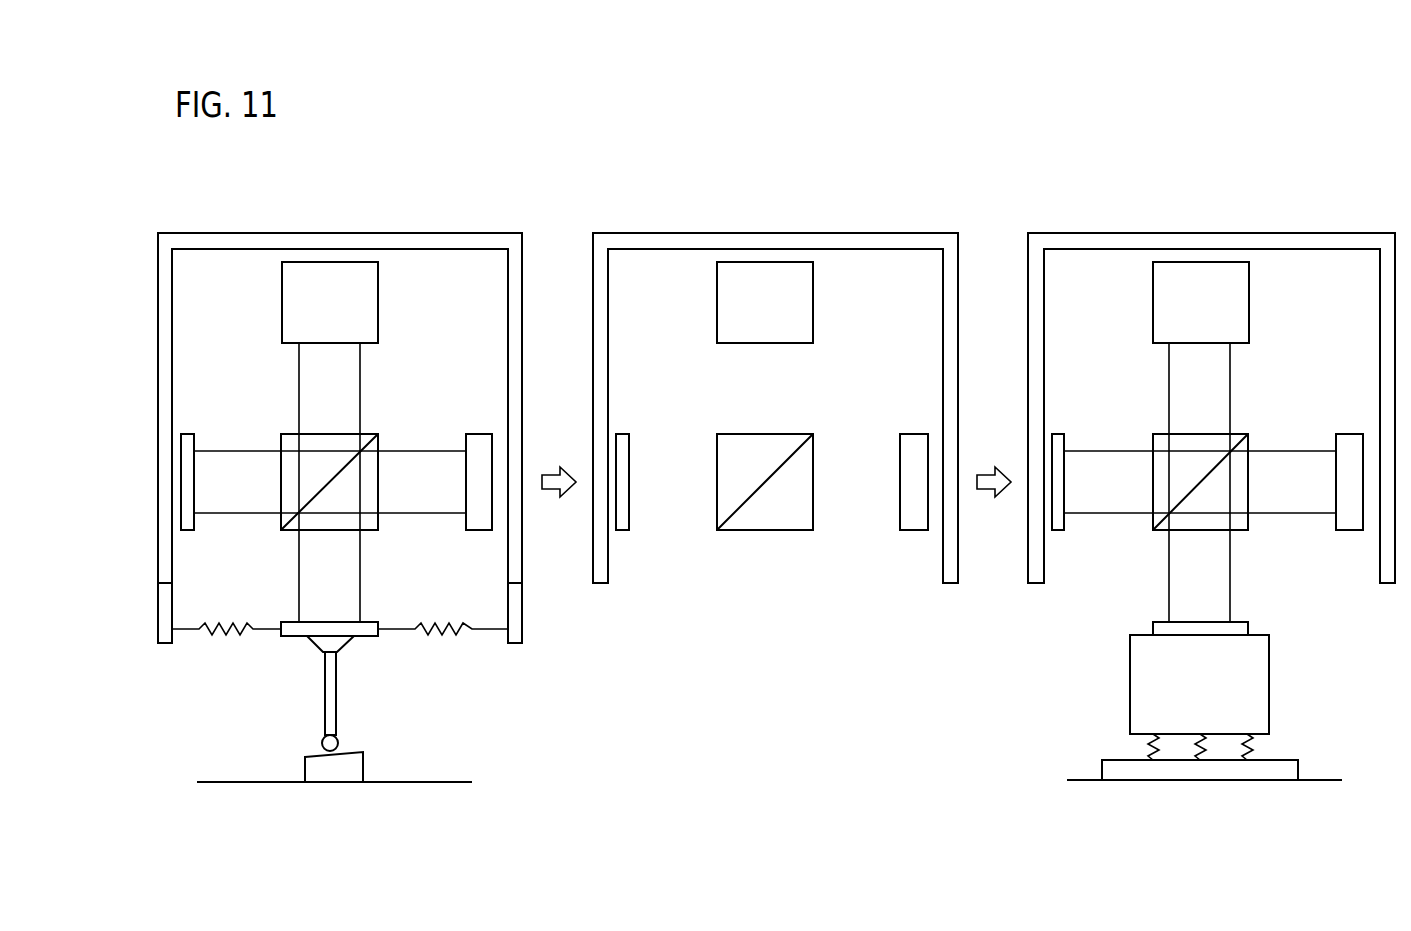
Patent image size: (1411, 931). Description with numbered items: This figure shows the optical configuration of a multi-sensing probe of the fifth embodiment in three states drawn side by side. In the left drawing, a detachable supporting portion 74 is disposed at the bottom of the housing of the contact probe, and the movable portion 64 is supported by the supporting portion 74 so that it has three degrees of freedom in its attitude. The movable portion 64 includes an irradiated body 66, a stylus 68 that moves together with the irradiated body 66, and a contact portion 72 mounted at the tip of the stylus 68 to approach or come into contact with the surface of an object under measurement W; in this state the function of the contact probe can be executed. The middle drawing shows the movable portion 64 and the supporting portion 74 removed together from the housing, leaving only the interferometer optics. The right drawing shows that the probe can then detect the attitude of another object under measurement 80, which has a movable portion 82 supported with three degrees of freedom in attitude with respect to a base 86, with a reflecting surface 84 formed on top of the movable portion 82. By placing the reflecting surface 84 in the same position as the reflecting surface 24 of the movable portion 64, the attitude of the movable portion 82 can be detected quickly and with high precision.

The reflecting surface 24 is at (358, 622).
The supporting portion 74 is at (440, 636).
The movable portion 64 is at (254, 692).
The irradiated body 66 is at (297, 633).
The stylus 68 is at (330, 697).
The contact portion 72 is at (322, 742).
The object under measurement W is at (341, 765).
The object under measurement 80 is at (1188, 681).
The reflecting surface 84 is at (1218, 620).
The movable portion 82 is at (1261, 676).
The base 86 is at (1290, 775).